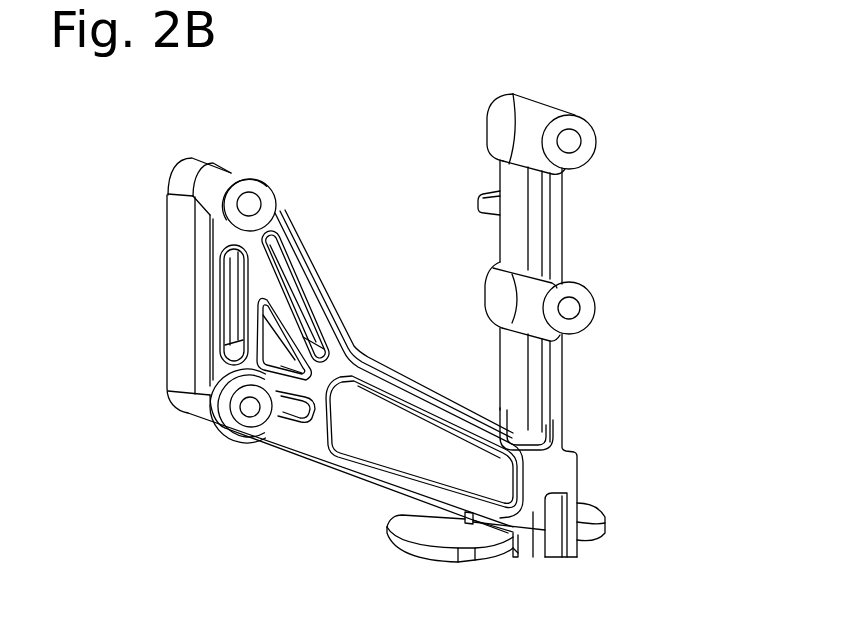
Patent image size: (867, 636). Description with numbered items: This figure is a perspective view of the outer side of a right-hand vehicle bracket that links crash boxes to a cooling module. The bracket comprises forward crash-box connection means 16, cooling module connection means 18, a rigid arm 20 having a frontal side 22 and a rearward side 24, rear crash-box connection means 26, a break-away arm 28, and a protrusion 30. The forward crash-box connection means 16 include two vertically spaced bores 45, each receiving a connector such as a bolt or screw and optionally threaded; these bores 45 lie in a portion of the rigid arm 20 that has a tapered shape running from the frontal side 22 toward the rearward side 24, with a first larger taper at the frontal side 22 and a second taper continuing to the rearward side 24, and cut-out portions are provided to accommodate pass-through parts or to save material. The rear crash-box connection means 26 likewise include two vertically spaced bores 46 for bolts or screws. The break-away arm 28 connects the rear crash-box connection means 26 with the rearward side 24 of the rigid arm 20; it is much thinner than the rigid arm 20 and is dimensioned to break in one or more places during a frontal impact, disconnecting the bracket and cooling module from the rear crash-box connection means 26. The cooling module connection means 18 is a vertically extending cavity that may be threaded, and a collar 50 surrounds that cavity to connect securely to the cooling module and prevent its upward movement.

The forward crash-box connection means 16 is at (163, 152).
The cooling module connection means 18 is at (563, 565).
The rigid arm 20 is at (310, 480).
The frontal side 22 is at (200, 448).
The rearward side 24 is at (430, 569).
The rear crash-box connection means 26 is at (585, 96).
The break-away arm 28 is at (562, 388).
The protrusion 30 is at (477, 185).
The bores 45 is at (249, 204).
The bores 46 is at (569, 141).
The collar 50 is at (428, 531).